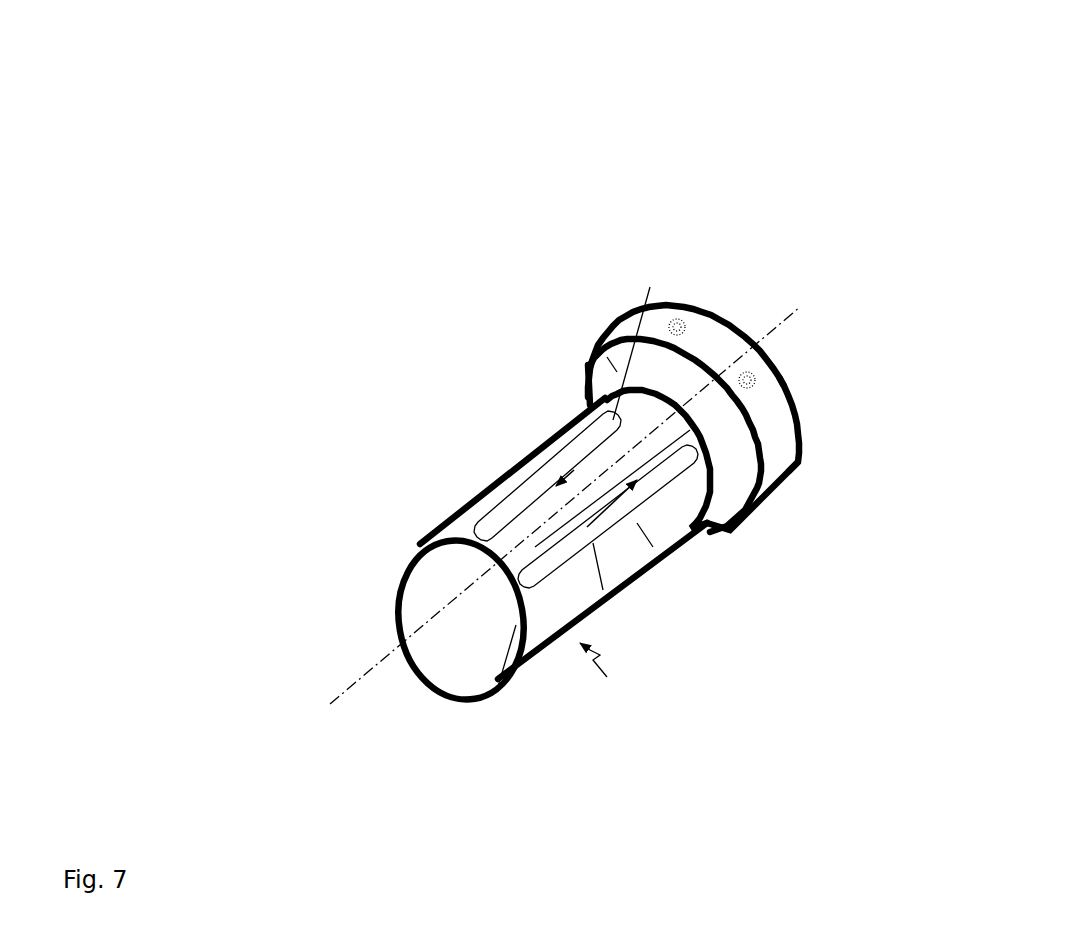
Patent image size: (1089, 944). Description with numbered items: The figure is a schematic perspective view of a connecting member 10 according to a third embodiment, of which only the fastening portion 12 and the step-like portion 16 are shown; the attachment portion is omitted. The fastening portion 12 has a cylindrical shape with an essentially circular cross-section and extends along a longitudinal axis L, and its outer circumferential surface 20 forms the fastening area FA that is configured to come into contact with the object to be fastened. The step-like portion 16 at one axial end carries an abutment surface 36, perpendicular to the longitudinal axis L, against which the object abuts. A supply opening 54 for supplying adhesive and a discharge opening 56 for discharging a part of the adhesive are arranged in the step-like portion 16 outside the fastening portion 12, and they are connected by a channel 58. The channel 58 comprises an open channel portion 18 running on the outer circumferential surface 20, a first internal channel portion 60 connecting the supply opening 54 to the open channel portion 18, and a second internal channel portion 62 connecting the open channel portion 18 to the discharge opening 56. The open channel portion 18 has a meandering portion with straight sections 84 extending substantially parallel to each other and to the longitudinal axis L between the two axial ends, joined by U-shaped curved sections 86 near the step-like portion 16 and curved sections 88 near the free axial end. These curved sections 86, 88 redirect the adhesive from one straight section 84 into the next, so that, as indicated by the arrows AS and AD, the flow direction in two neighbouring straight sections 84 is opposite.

The connecting member 10 is at (1022, 127).
The fastening portion 12 is at (378, 328).
The step-like portion 16 is at (737, 318).
The open channel portion 18 is at (533, 440).
The outer circumferential surface 20 is at (547, 434).
The abutment surface 36 is at (612, 365).
The supply opening 54 is at (680, 320).
The discharge opening 56 is at (780, 380).
The channel 58 is at (780, 497).
The first internal channel portion 60 is at (690, 365).
The second internal channel portion 62 is at (793, 408).
The straight sections 84 is at (503, 500).
The curved sections 86 is at (577, 393).
The curved sections 88 is at (420, 546).
The arrow indicating adhesive flow direction AS is at (650, 287).
The longitudinal axis L is at (572, 495).
The arrow indicating adhesive flow direction AD is at (705, 560).
The fastening area FA is at (604, 674).